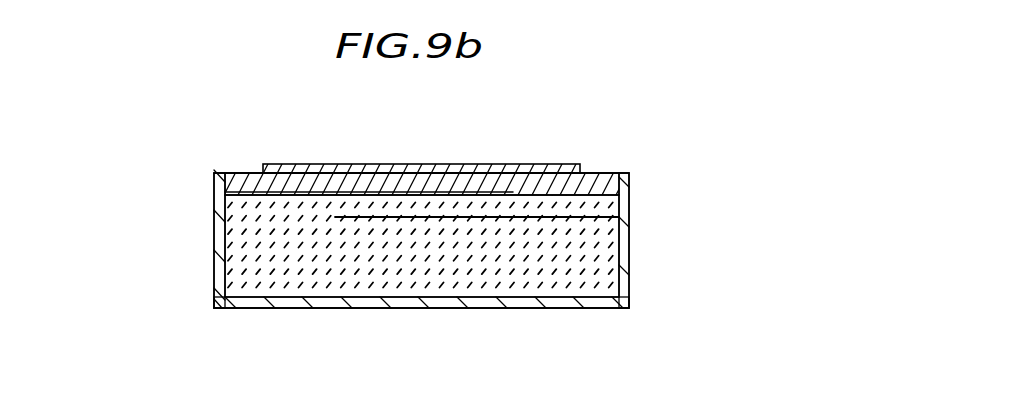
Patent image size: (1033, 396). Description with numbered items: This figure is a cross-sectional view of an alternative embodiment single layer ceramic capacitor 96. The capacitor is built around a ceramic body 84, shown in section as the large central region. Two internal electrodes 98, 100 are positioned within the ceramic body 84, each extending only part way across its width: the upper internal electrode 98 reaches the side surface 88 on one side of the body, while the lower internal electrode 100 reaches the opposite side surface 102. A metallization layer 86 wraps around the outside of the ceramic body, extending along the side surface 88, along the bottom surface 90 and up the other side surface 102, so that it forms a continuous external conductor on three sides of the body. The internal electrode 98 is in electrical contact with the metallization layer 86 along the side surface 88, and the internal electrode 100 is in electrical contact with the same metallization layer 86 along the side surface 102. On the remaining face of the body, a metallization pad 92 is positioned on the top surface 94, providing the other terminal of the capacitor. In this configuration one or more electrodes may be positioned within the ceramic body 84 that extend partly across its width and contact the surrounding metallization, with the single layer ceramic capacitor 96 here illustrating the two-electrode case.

The ceramic body 84 is at (565, 237).
The metallization layer 86 is at (216, 309).
The side surface 88 is at (214, 248).
The bottom surface 90 is at (350, 300).
The metallization pad 92 is at (372, 166).
The top surface 94 is at (593, 173).
The single layer ceramic capacitor 96 is at (705, 150).
The internal electrode 98 is at (236, 173).
The internal electrode 100 is at (593, 213).
The side surface 102 is at (618, 286).